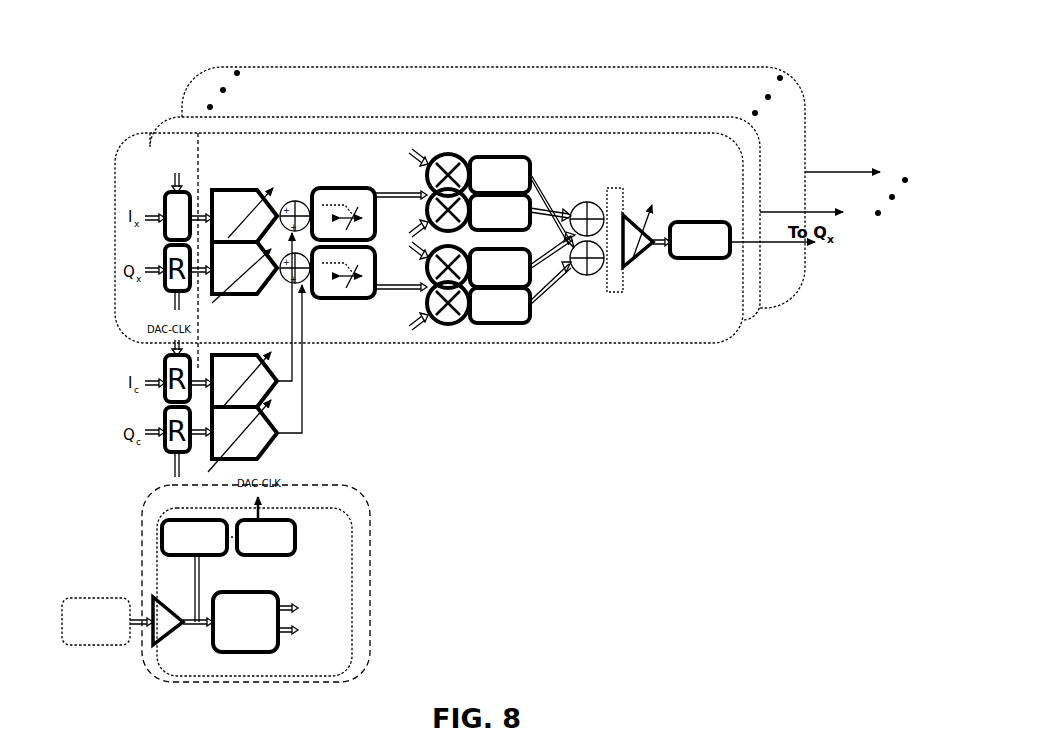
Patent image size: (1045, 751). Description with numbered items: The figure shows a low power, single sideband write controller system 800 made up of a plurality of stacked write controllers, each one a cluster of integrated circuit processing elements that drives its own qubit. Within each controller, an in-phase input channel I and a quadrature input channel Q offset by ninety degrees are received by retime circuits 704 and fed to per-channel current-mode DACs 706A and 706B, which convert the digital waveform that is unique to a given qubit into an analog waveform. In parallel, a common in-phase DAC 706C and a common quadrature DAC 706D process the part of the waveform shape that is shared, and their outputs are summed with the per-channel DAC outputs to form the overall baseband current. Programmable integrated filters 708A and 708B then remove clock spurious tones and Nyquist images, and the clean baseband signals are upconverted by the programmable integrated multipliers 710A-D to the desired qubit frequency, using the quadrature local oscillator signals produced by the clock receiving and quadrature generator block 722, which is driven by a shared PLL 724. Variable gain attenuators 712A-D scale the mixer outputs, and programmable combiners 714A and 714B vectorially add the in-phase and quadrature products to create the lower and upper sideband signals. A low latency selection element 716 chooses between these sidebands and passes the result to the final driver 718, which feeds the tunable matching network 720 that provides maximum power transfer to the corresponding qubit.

The controller system having a plurality of write controllers 800 is at (100, 99).
The retime circuit 704 is at (158, 200).
The in-phase DAC 706A is at (237, 188).
The quadrature-phase DAC 706B is at (234, 305).
The common DAC for the in-phase signal 706C is at (283, 365).
The common DAC for the quadrature signal 706D is at (280, 447).
The programmable integrated filter 708A is at (344, 187).
The programmable integrated filter 708B is at (345, 305).
The programmable integrated multipliers 710A-D is at (461, 335).
The variable gain attenuators 712A-D is at (517, 335).
The programmable combiner 714A is at (583, 207).
The programmable combiner 714B is at (582, 277).
The low latency selection element 716 is at (617, 231).
The final driver 718 is at (632, 263).
The matching network 720 is at (700, 252).
The clock receiving and quadrature generator block 722 is at (370, 643).
The PLL 724 is at (59, 603).